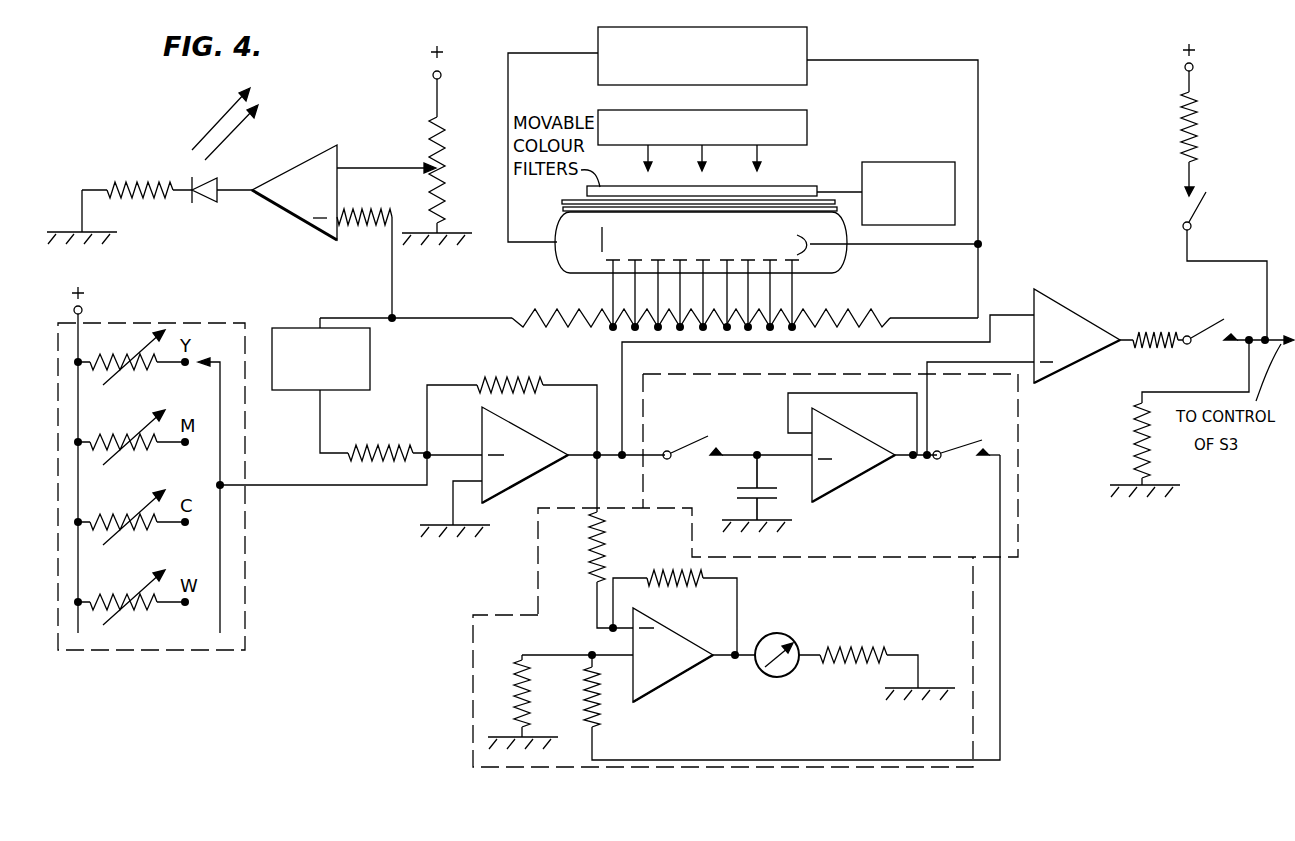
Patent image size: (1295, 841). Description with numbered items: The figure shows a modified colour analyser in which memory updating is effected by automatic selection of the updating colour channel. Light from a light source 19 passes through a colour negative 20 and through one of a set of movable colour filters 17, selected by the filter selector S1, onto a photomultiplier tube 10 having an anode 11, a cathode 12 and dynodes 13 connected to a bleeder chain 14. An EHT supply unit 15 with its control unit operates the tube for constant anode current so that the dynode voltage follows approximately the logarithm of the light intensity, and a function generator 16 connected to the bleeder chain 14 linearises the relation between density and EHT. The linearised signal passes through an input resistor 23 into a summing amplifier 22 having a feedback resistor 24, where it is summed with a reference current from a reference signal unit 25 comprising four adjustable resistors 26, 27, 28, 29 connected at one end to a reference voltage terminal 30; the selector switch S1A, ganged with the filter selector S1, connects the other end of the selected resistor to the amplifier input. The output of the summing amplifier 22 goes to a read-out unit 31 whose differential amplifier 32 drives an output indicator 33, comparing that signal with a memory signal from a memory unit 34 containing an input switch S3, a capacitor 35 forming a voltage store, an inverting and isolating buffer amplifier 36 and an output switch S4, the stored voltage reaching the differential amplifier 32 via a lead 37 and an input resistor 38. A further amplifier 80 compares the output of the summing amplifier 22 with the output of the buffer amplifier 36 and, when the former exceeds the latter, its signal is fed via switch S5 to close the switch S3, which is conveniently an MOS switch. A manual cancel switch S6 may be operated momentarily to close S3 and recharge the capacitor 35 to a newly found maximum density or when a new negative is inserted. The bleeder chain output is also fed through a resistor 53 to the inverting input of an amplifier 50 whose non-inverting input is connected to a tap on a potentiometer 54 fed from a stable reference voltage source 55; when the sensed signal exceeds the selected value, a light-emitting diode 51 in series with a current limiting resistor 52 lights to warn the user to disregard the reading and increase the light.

The photomultiplier tube 10 is at (847, 262).
The anode 11 is at (600, 247).
The cathode 12 is at (808, 252).
The dynodes 13 is at (730, 262).
The bleeder chain 14 is at (738, 327).
The EHT supply unit 15 is at (807, 50).
The function generator 16 is at (370, 368).
The movable colour filters 17 is at (781, 186).
The light source 19 is at (807, 118).
The colour negative 20 is at (562, 202).
The summing amplifier 22 is at (543, 450).
The input resistor 23 is at (374, 446).
The feedback resistor 24 is at (522, 372).
The reference signal unit 25 is at (170, 651).
The adjustable resistor 26 is at (120, 353).
The adjustable resistor 27 is at (120, 433).
The adjustable resistor 28 is at (120, 513).
The adjustable resistor 29 is at (120, 593).
The reference voltage source terminal 30 is at (83, 309).
The read-out unit 31 is at (473, 710).
The differential amplifier 32 is at (674, 636).
The output indicator 33 is at (781, 633).
The memory unit 34 is at (1034, 400).
The capacitor 35 is at (737, 488).
The buffer amplifier 36 is at (854, 430).
The lead 37 is at (1000, 617).
The input resistor 38 is at (597, 730).
The amplifier 50 is at (306, 162).
The light-emitting diode 51 is at (209, 202).
The current limiting resistor 52 is at (132, 183).
The resistor 53 is at (354, 225).
The potentiometer 54 is at (436, 121).
The stable reference voltage source 55 is at (432, 75).
The further amplifier 80 is at (1073, 312).
The filter selector S1 is at (922, 225).
The selector switch S1A is at (263, 519).
The input switch S3 is at (737, 441).
The output switch S4 is at (966, 441).
The switch S5 is at (1213, 324).
The cancel switch S6 is at (1200, 212).